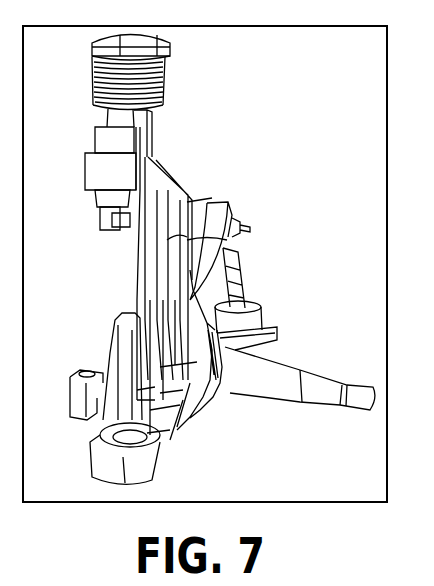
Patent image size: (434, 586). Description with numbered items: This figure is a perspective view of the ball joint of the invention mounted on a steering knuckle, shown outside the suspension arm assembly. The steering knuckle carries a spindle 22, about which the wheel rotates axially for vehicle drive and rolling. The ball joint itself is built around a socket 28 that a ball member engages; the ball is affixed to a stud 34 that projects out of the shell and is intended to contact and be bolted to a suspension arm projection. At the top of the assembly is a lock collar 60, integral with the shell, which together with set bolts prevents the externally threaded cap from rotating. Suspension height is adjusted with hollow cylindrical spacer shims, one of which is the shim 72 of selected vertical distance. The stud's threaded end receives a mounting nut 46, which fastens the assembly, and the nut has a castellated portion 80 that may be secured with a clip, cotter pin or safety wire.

The spindle 22 is at (290, 371).
The socket 28 is at (137, 80).
The stud 34 is at (132, 115).
The mounting nut 46 is at (107, 210).
The lock collar 60 is at (168, 47).
The shim 72 is at (100, 198).
The castellated portion 80 is at (123, 217).